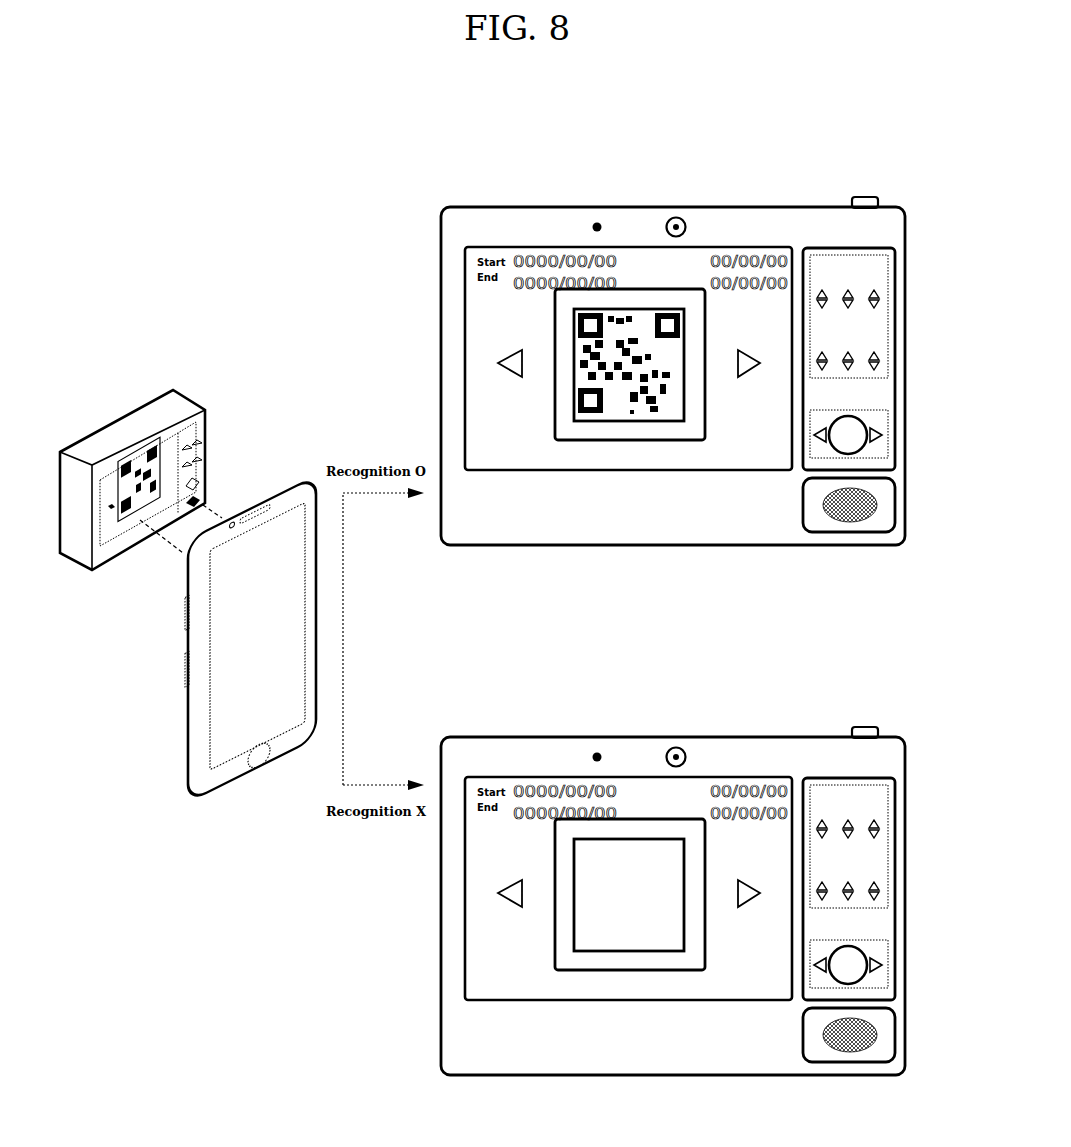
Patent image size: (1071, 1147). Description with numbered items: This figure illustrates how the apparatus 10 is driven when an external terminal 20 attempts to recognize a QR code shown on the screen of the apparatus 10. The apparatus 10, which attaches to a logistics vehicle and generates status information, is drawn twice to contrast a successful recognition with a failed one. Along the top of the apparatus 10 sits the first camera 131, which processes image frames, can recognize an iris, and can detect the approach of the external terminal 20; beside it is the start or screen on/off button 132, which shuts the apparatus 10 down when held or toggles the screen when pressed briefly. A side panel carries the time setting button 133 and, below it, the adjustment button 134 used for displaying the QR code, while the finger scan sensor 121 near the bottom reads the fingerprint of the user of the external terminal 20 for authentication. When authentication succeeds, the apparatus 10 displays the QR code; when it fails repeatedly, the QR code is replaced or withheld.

The apparatus 10 is at (190, 398).
The external terminal 20 is at (303, 470).
The finger scan sensor 121 is at (878, 500).
The first camera 131 is at (597, 212).
The start or screen on/off button 132 is at (866, 197).
The time setting button 133 is at (891, 316).
The adjustment button 134 is at (891, 428).